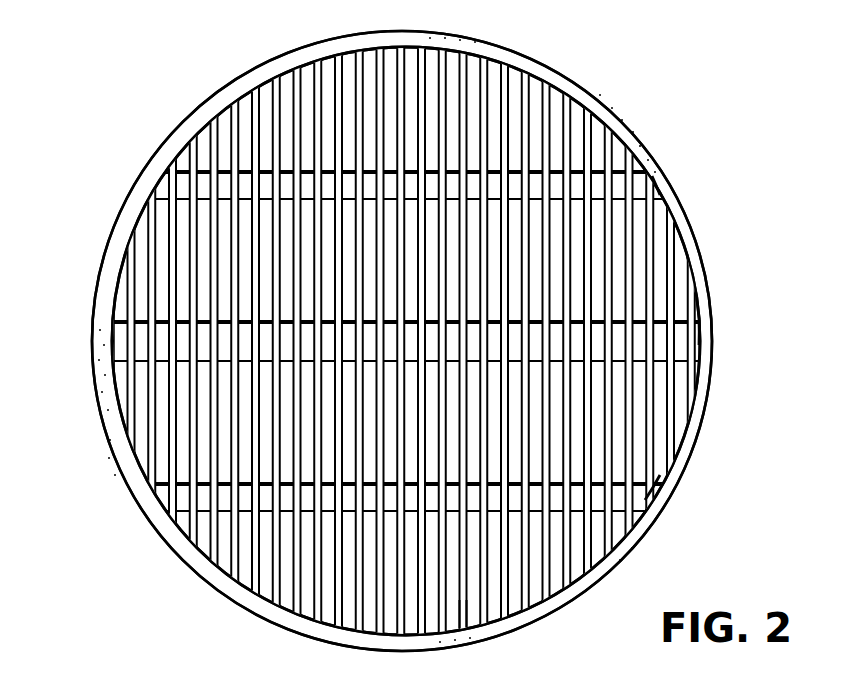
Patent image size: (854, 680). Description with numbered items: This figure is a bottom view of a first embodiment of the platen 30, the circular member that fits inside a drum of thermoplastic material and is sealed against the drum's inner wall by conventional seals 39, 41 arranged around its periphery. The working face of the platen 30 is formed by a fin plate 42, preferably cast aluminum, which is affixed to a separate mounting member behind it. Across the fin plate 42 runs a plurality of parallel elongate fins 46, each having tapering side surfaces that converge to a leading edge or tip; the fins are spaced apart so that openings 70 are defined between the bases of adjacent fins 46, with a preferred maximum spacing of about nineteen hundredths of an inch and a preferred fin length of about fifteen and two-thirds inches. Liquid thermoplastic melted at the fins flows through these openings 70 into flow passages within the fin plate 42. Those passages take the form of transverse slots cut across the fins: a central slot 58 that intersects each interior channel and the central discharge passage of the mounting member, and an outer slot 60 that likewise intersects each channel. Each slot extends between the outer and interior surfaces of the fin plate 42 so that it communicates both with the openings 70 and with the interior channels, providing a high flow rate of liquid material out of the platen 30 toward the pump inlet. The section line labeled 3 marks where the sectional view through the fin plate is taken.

The platen 30 is at (656, 129).
The seal 39 is at (578, 95).
The seal 41 is at (406, 341).
The fin plate 42 is at (192, 130).
The elongate fins 46 is at (405, 326).
The central slot 58 is at (700, 332).
The outer slot 60 is at (653, 485).
The openings 70 is at (463, 622).
The section line 3- 3 is at (93, 332).